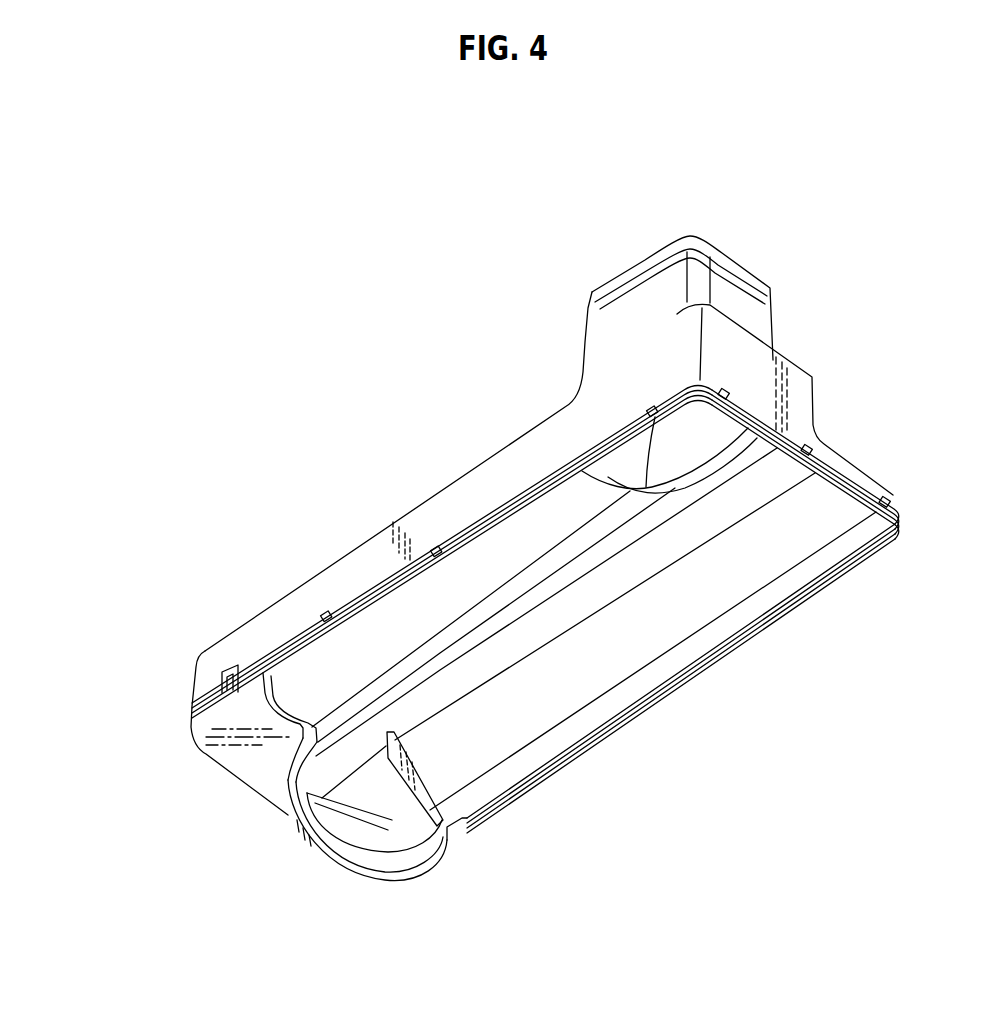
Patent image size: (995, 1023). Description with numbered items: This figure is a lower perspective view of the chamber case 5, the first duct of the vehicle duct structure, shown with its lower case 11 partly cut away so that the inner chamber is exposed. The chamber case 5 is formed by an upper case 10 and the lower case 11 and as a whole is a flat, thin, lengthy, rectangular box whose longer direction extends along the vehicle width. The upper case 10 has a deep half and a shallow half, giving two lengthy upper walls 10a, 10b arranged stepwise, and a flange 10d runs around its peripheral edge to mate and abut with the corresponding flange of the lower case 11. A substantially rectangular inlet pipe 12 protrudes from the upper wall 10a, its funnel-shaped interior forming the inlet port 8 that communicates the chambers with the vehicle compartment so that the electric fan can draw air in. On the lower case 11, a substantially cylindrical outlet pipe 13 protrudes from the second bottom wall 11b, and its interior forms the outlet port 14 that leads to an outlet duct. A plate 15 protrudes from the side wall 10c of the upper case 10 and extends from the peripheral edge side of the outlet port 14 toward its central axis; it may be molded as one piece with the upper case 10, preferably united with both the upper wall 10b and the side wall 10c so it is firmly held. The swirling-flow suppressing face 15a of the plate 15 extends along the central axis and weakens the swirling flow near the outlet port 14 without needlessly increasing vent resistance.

The chamber case 5 is at (378, 340).
The inlet port 8 is at (638, 250).
The upper case 10 is at (343, 553).
The upper wall 10a is at (484, 553).
The upper wall 10b is at (627, 647).
The side wall 10c is at (490, 777).
The flange 10d is at (753, 633).
The lower case 11 is at (222, 775).
The second bottom wall 11b is at (234, 752).
The inlet pipe 12 is at (582, 340).
The outlet pipe 13 is at (288, 840).
The outlet port 14 is at (351, 890).
The plate 15 is at (399, 785).
The face 15a is at (467, 823).